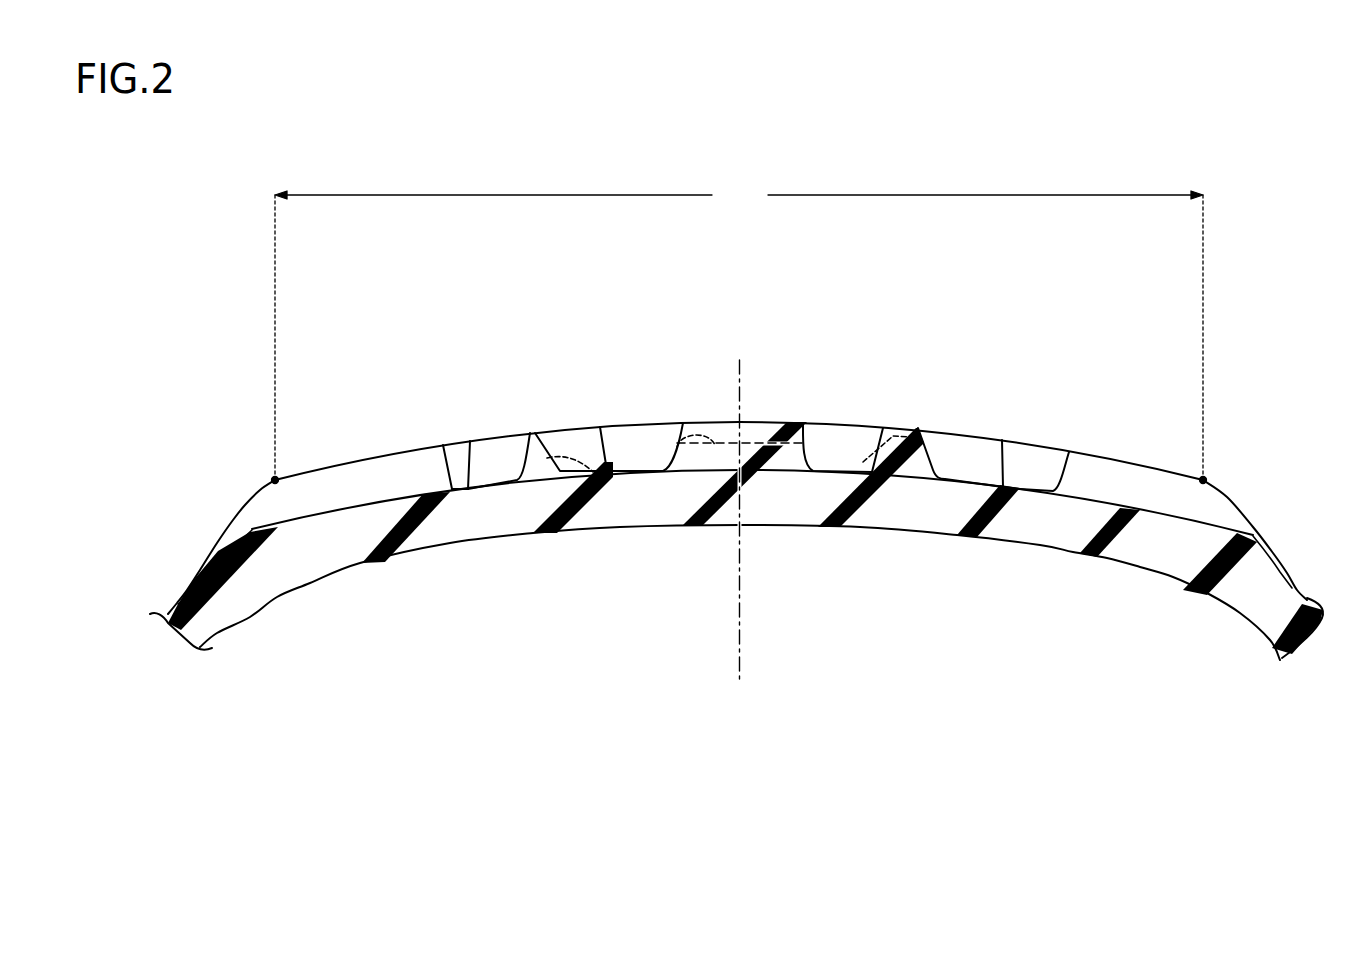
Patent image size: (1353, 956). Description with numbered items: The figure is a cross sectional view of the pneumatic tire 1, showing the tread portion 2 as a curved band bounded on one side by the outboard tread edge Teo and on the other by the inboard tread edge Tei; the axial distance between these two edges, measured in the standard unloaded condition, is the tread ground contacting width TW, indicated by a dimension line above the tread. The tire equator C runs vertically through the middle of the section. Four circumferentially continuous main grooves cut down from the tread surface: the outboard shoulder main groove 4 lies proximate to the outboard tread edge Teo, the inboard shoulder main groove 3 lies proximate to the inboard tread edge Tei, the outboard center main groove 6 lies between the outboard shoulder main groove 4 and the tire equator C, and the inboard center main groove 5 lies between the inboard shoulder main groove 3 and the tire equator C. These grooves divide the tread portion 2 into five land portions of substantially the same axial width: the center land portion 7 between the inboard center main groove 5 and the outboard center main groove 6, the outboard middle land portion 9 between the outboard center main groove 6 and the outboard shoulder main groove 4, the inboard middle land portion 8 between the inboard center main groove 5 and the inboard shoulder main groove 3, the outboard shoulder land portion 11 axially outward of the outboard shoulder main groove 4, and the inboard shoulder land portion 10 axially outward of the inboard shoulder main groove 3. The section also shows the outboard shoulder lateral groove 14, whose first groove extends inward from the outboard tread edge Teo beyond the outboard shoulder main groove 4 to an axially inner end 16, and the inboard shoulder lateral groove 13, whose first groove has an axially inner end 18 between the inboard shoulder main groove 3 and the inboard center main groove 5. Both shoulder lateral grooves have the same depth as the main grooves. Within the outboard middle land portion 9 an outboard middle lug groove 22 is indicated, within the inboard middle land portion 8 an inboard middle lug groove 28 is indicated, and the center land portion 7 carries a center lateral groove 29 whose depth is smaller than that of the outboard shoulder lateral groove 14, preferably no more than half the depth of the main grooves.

The pneumatic tire 1 is at (1018, 330).
The tread portion 2 is at (645, 335).
The inboard shoulder main groove 3 is at (1030, 457).
The outboard shoulder main groove 4 is at (457, 458).
The inboard center main groove 5 is at (837, 440).
The outboard center main groove 6 is at (633, 432).
The center land portion 7 is at (770, 423).
The inboard middle land portion 8 is at (953, 435).
The outboard middle land portion 9 is at (583, 423).
The inboard shoulder land portion 10 is at (1123, 456).
The outboard shoulder land portion 11 is at (370, 457).
The inboard shoulder lateral groove 13 is at (1097, 470).
The outboard shoulder lateral groove 14 is at (407, 463).
The axially inner end of first outboard shoulder lateral groove 16 is at (535, 432).
The axially inner end of first inboard shoulder lateral groove 18 is at (917, 430).
The outboard middle lug groove 22 is at (590, 463).
The inboard middle lug groove 28 is at (862, 472).
The center lateral groove 29 is at (682, 426).
The tire equator C is at (738, 505).
The tread ground contacting width TW is at (739, 331).
The outboard tread edge Teo is at (275, 479).
The inboard tread edge Tei is at (1203, 479).